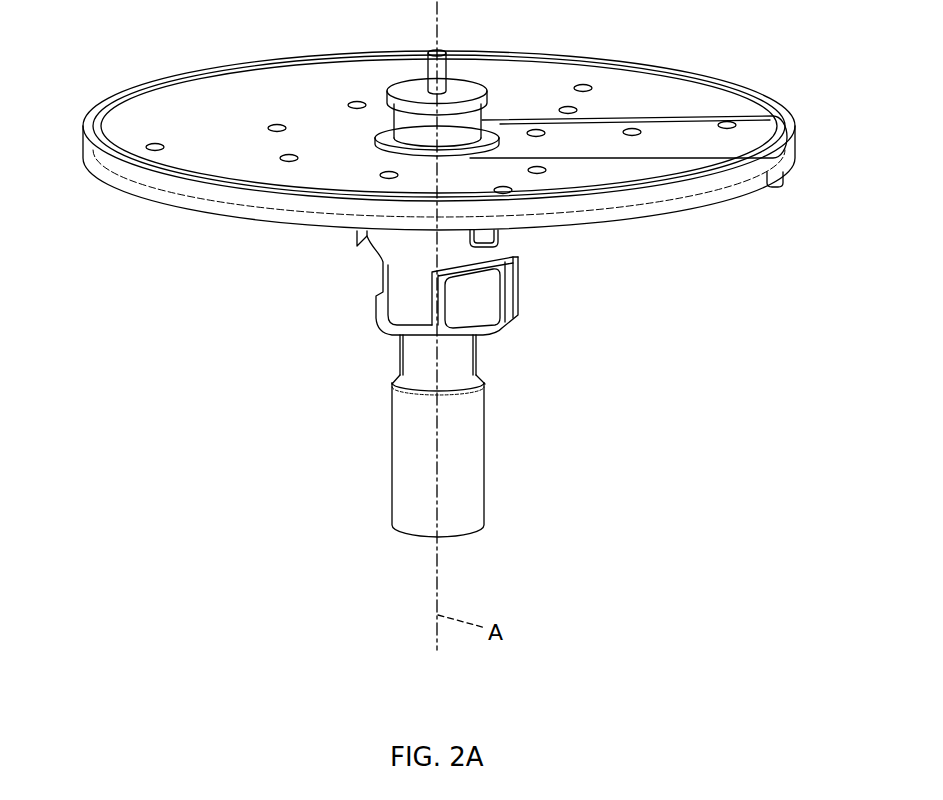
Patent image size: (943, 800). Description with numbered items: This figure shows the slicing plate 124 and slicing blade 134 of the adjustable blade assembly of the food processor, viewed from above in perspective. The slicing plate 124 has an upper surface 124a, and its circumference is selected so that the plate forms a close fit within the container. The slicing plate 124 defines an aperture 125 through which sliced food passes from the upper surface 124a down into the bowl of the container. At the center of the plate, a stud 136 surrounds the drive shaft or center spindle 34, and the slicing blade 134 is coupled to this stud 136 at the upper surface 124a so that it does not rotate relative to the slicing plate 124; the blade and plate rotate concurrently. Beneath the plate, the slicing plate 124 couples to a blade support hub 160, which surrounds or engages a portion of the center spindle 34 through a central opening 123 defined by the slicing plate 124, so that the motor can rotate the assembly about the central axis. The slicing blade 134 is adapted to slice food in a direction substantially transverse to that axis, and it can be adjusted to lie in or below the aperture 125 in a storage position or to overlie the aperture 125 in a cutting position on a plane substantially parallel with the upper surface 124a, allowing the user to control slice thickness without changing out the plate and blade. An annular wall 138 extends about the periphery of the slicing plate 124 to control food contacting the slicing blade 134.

The center spindle 34 is at (430, 70).
The central opening 123 is at (420, 157).
The slicing plate 124 is at (435, 141).
The upper surface 124a is at (233, 100).
The aperture 125 is at (781, 127).
The slicing blade 134 is at (657, 145).
The stud 136 is at (393, 116).
The annular wall 138 is at (90, 160).
The blade support hub 160 is at (400, 451).